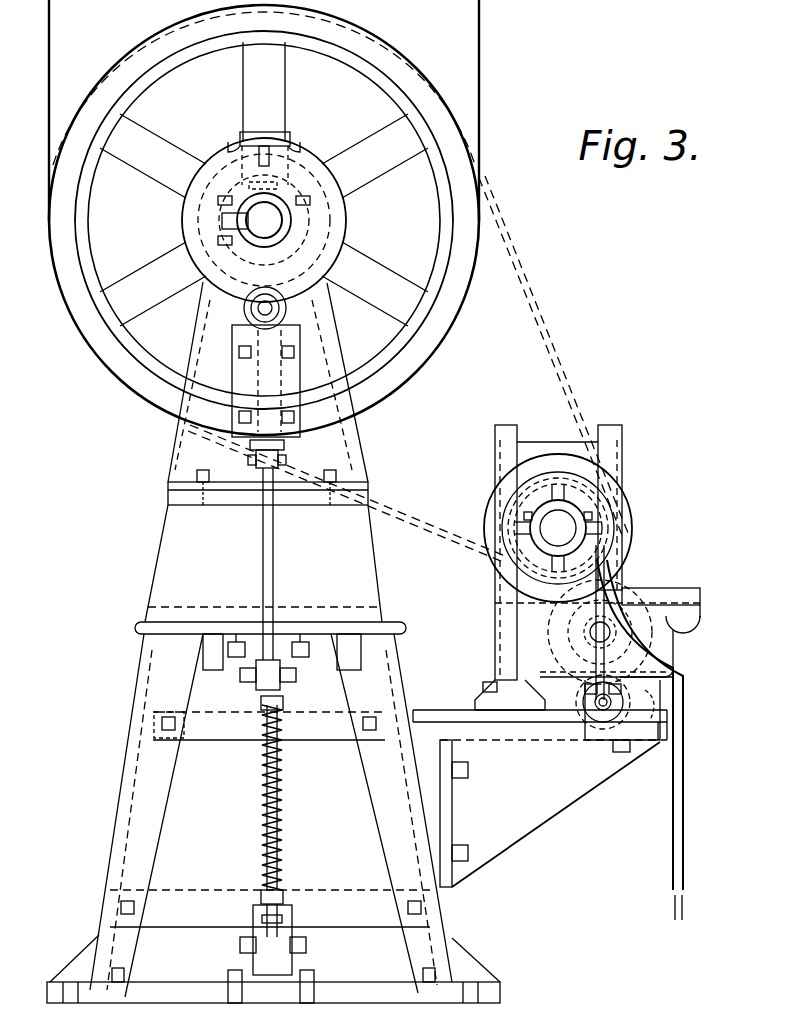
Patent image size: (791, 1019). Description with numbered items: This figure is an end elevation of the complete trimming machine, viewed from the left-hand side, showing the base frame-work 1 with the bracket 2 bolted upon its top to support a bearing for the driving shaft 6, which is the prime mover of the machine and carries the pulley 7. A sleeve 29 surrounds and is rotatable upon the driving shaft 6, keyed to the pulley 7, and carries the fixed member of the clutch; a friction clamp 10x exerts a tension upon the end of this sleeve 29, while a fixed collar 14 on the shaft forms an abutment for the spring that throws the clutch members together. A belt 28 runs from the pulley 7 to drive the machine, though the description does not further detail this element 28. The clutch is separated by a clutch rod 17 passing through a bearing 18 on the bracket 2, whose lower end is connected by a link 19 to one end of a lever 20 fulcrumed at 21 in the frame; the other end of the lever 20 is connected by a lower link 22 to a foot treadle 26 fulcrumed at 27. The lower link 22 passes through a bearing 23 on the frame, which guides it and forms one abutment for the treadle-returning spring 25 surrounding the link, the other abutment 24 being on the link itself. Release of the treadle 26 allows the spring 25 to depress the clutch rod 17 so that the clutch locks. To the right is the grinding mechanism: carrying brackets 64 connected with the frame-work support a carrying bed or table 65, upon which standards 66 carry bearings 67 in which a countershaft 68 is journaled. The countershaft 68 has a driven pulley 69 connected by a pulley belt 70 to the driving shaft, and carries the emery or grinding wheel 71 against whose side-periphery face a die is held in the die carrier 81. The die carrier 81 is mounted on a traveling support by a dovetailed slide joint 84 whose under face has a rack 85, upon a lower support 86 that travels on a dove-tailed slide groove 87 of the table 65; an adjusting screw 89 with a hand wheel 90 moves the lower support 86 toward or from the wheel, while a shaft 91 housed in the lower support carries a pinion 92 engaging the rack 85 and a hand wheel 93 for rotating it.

The base frame-work 1 is at (135, 793).
The bracket 2 is at (190, 460).
The driving shaft 6 is at (264, 220).
The pulley 7 is at (150, 45).
The friction clamp 10x is at (200, 218).
The fixed collar 14 is at (274, 200).
The clutch rod 17 is at (290, 456).
The bearing 18 is at (236, 370).
The link 19 is at (273, 552).
The lever 20 is at (242, 675).
The fulcrum 21 is at (297, 683).
The lower link 22 is at (286, 795).
The bearing 23 is at (258, 705).
The abutment 24 is at (280, 925).
The treadle-returning spring 25 is at (262, 822).
The foot treadle 26 is at (252, 948).
The fulcrum 27 is at (308, 946).
The belt 28 is at (480, 60).
The sleeve 29 is at (236, 184).
The carrying brackets 64 is at (550, 813).
The carrying bed or table 65 is at (445, 710).
The standards 66 is at (512, 650).
The bearings 67 is at (525, 533).
The countershaft 68 is at (558, 528).
The driven pulley 69 is at (525, 495).
The pulley belt 70 is at (535, 318).
The emery or grinding wheel 71 is at (503, 510).
The die carrier 81 is at (598, 455).
The dovetailed slide joint 84 is at (703, 597).
The rack 85 is at (690, 628).
The lower support 86 is at (660, 699).
The dove-tailed slide groove 87 is at (648, 700).
The adjusting screw 89 is at (598, 730).
The hand wheel 90 is at (592, 720).
The shaft 91 is at (612, 605).
The pinion 92 is at (592, 636).
The hand wheel 93 is at (678, 655).